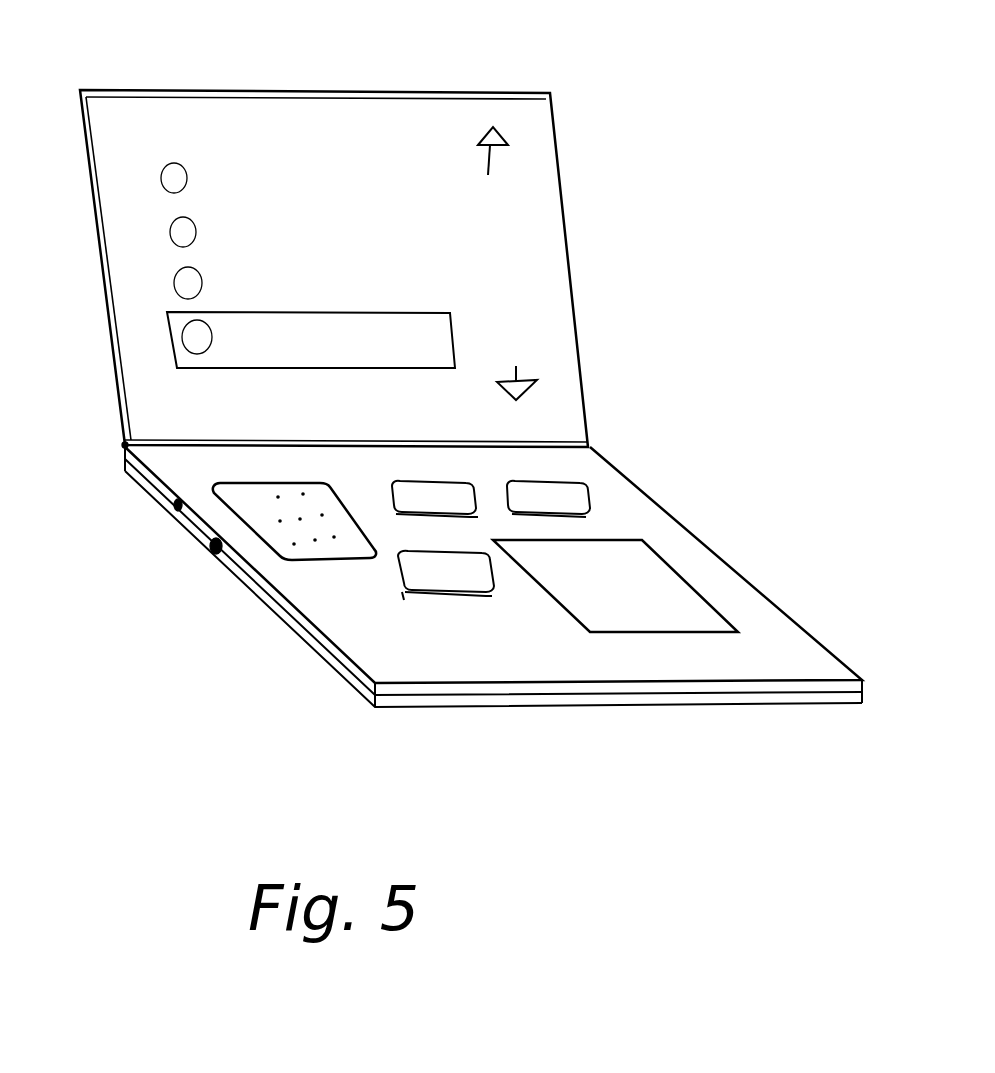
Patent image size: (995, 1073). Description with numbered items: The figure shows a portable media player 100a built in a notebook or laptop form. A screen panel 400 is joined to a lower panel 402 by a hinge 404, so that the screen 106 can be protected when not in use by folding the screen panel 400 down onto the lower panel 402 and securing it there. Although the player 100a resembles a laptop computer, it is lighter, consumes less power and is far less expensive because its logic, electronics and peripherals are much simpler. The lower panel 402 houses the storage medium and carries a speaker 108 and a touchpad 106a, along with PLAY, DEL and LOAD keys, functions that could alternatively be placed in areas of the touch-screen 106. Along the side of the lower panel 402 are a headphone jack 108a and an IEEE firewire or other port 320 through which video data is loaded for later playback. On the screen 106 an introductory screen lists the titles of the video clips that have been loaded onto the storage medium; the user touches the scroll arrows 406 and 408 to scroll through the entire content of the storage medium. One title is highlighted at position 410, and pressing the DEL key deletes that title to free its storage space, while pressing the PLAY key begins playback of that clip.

The portable media player 100a is at (670, 172).
The screen panel 400 is at (298, 92).
The screen 106 is at (552, 268).
The highlighted title position 410 is at (362, 352).
The scroll arrow 406 is at (485, 172).
The scroll arrow 408 is at (497, 380).
The hinge 404 is at (125, 447).
The lower panel 402 is at (766, 595).
The touchpad 106a is at (642, 608).
The speaker 108 is at (258, 500).
The port 320 is at (172, 505).
The headphone jack 108a is at (212, 546).